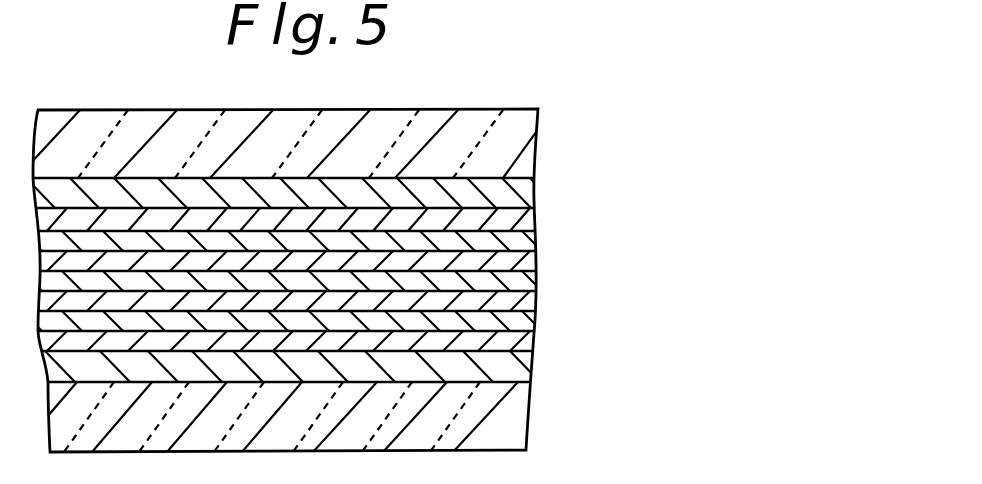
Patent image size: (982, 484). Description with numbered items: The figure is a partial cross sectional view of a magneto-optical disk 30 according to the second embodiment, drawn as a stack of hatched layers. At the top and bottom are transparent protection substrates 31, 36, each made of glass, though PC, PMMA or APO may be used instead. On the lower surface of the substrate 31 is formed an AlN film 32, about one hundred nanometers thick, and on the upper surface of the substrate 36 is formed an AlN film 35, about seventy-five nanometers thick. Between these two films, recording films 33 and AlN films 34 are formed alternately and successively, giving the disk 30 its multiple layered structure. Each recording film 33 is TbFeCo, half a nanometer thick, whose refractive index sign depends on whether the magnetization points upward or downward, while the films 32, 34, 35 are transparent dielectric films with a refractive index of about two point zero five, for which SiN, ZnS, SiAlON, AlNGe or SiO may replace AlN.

The magneto-optical disk 30 is at (455, 108).
The transparent protection substrate 31 is at (537, 142).
The AlN film 32 is at (525, 187).
The recording film 33 is at (523, 216).
The AlN film 34 is at (537, 238).
The AlN film 35 is at (533, 368).
The transparent protection substrate 36 is at (530, 415).